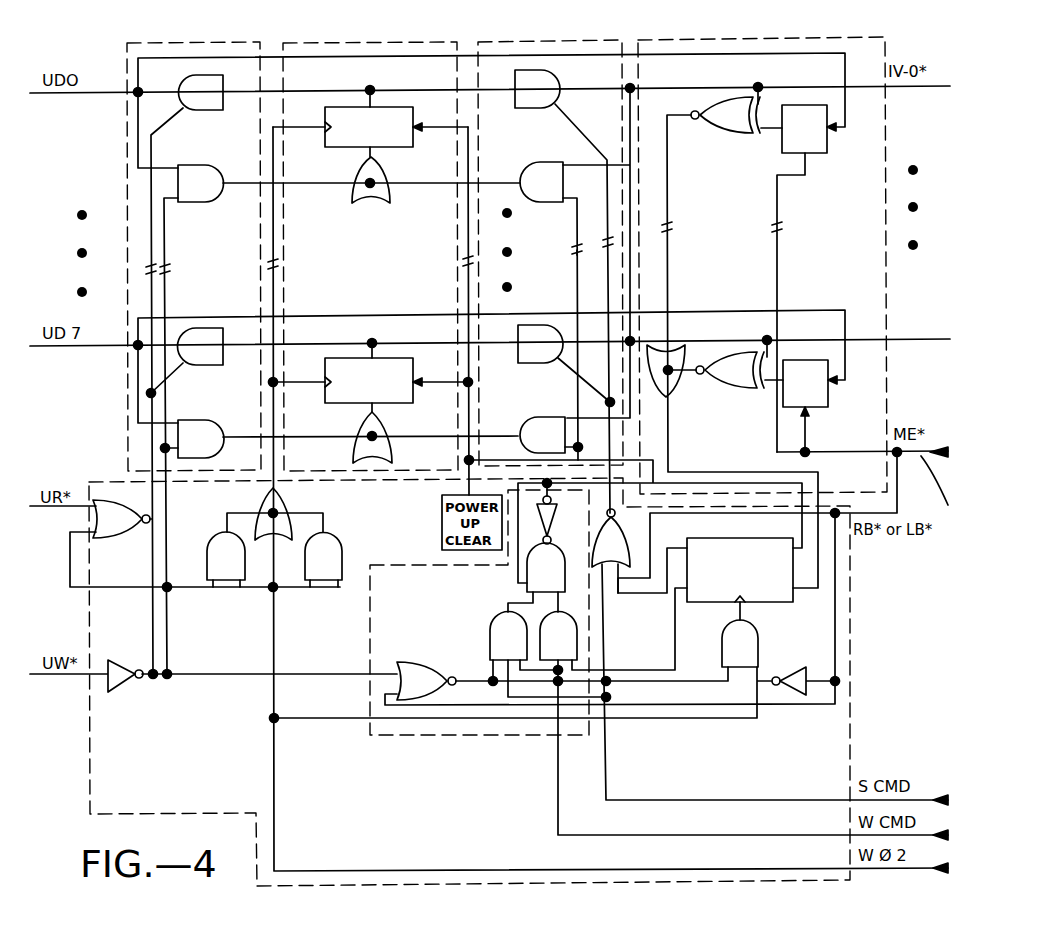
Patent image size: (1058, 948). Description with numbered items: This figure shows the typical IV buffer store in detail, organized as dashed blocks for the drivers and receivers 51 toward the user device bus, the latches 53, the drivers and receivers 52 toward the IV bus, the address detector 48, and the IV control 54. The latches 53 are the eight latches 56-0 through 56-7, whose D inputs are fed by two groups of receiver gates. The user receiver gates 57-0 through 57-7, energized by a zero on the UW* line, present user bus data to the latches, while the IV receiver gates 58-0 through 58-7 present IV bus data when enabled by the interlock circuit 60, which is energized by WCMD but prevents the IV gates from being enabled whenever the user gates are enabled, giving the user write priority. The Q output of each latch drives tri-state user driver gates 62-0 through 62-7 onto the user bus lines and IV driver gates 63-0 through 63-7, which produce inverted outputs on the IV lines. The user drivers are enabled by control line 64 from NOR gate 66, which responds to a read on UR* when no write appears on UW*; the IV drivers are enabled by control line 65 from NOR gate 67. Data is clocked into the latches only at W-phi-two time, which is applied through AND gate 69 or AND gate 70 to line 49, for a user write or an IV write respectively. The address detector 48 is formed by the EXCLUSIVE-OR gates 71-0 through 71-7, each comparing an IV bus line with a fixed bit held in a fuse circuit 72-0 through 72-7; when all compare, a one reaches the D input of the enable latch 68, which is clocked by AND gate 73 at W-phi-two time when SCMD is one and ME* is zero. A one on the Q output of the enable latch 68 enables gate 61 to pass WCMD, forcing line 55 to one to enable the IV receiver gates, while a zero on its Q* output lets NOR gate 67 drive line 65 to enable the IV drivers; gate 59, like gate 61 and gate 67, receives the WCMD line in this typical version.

The address detector 48 is at (697, 38).
The line 49 is at (270, 233).
The drivers and receivers 51 is at (127, 40).
The drivers and receivers 52 is at (527, 40).
The latches 53 is at (350, 42).
The IV control 54 is at (852, 632).
The line 55 is at (575, 272).
The latch 56-0 is at (370, 132).
The latch 56-7 is at (342, 358).
The receiver gate 57-0 is at (190, 170).
The receiver gate 57-7 is at (195, 430).
The receiver gate 58-0 is at (546, 165).
The receiver gate 58-7 is at (548, 422).
The gate 59 is at (498, 635).
The interlock circuit 60 is at (370, 636).
The gate 61 is at (565, 637).
The user driver gate 62-0 is at (202, 84).
The user driver gate 62-7 is at (203, 337).
The IV driver gate 63-0 is at (545, 80).
The IV driver gate 63-7 is at (530, 335).
The control line 64 is at (176, 118).
The control line 65 is at (572, 122).
The NOR gate 66 is at (105, 537).
The NOR gate 67 is at (600, 537).
The enable latch 68 is at (742, 538).
The AND gate 69 is at (222, 545).
The AND gate 70 is at (335, 545).
The EXCLUSIVE-OR gate 71-0 is at (735, 133).
The EXCLUSIVE-OR gate 71-7 is at (738, 388).
The fuse circuit 72-0 is at (808, 105).
The fuse circuit 72-7 is at (830, 366).
The AND gate 73 is at (745, 645).